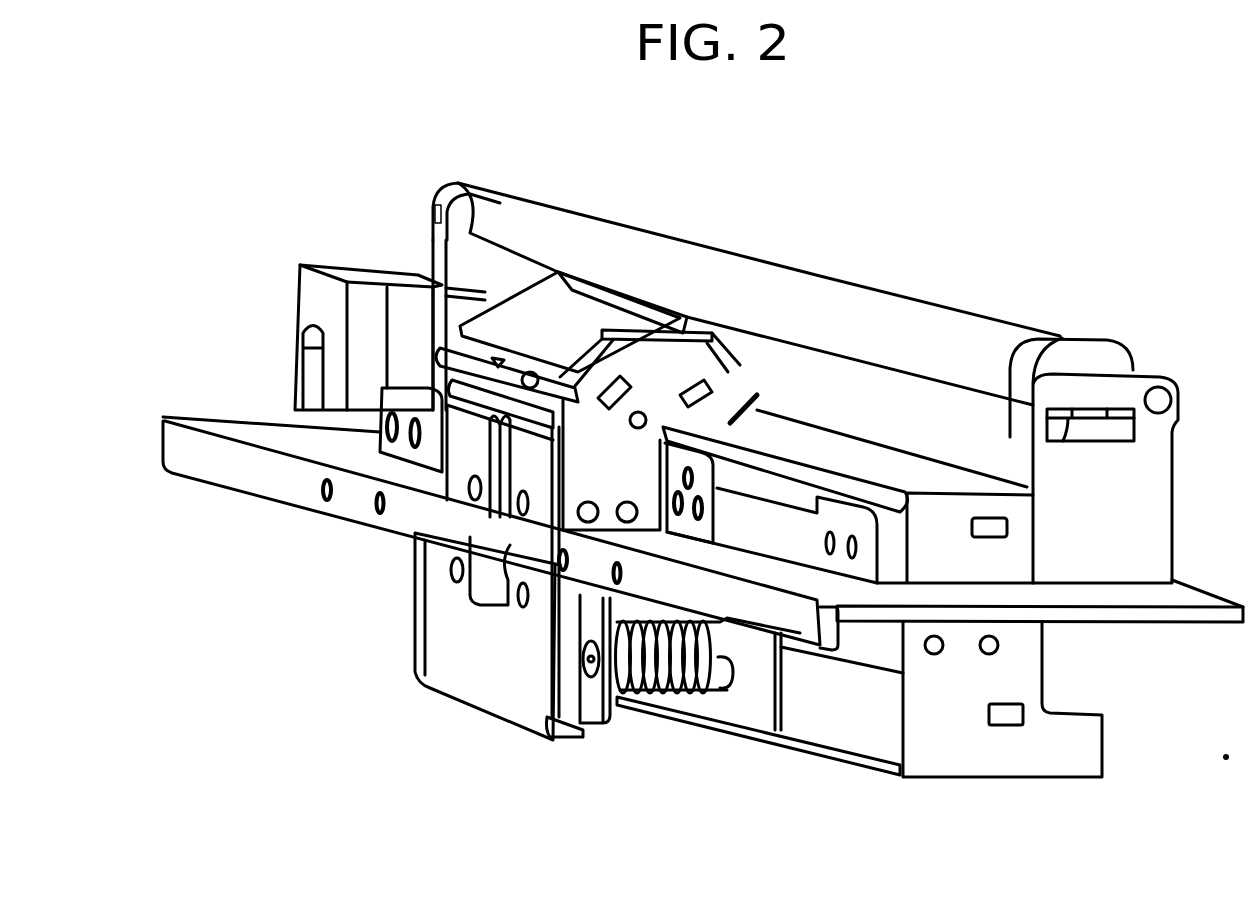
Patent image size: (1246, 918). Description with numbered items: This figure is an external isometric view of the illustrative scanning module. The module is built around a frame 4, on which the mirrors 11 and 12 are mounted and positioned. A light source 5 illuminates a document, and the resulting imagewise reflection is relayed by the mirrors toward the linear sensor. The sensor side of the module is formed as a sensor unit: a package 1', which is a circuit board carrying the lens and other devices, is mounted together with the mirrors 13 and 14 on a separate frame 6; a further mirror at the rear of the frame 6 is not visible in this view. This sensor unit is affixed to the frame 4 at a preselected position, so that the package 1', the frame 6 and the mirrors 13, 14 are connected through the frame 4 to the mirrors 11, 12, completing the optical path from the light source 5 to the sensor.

The package 1' is at (741, 741).
The frame 4 is at (197, 424).
The light source 5 is at (1030, 332).
The frame 6 is at (495, 680).
The mirror 11 is at (890, 777).
The mirror 12 is at (877, 457).
The mirror 13 is at (677, 313).
The mirror 14 is at (530, 297).